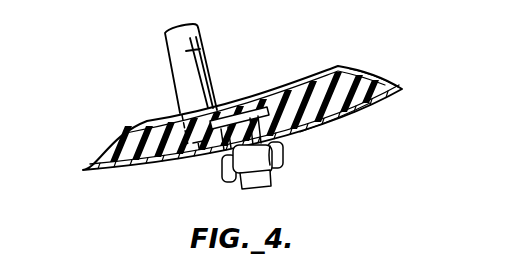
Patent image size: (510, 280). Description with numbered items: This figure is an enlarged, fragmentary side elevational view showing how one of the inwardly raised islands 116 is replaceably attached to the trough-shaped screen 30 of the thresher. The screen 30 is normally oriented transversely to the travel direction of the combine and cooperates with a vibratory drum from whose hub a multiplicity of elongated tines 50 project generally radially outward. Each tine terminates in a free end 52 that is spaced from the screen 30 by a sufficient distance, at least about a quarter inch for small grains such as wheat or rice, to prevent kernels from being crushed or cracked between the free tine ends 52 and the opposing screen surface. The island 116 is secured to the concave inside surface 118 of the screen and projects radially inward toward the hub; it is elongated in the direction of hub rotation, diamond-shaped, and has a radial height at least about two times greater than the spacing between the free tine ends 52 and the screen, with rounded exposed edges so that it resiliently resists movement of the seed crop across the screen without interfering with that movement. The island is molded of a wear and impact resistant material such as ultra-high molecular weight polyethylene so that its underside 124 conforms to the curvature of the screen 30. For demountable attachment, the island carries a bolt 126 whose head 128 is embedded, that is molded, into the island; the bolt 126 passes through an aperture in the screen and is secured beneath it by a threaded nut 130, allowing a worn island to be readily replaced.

The trough-shaped screen 30 is at (362, 112).
The elongated tines 50 is at (199, 29).
The free ends 52 is at (196, 164).
The raised islands 116 is at (288, 96).
The concave inside surface 118 is at (422, 70).
The undersides 124 is at (377, 155).
The bolt 126 is at (237, 178).
The head 128 is at (243, 116).
The threaded nut 130 is at (276, 154).